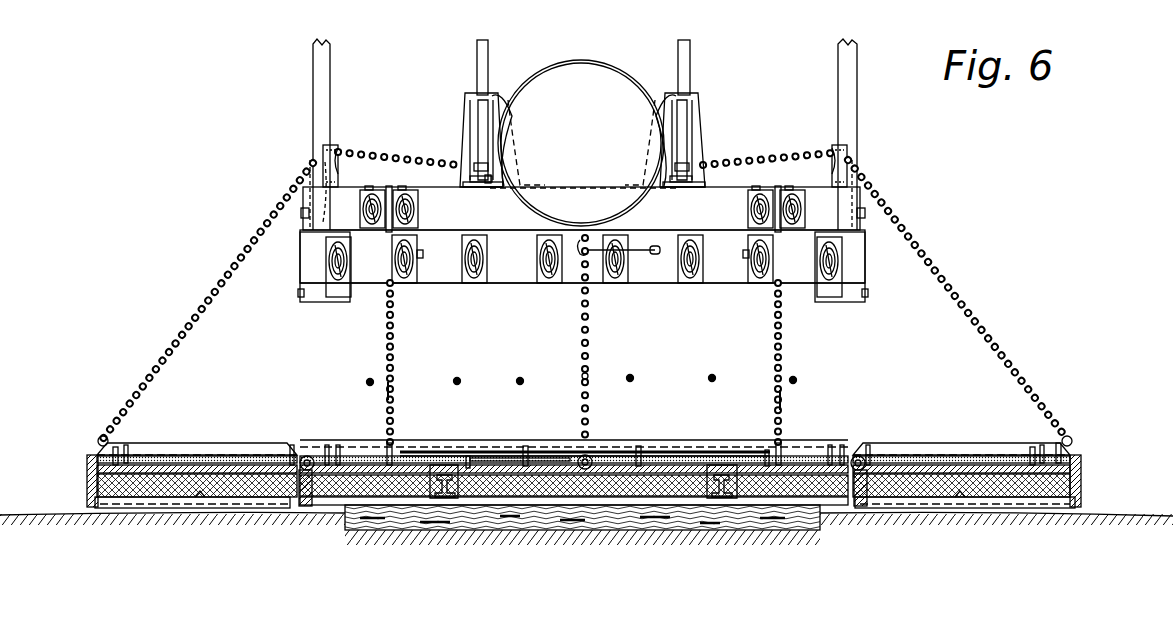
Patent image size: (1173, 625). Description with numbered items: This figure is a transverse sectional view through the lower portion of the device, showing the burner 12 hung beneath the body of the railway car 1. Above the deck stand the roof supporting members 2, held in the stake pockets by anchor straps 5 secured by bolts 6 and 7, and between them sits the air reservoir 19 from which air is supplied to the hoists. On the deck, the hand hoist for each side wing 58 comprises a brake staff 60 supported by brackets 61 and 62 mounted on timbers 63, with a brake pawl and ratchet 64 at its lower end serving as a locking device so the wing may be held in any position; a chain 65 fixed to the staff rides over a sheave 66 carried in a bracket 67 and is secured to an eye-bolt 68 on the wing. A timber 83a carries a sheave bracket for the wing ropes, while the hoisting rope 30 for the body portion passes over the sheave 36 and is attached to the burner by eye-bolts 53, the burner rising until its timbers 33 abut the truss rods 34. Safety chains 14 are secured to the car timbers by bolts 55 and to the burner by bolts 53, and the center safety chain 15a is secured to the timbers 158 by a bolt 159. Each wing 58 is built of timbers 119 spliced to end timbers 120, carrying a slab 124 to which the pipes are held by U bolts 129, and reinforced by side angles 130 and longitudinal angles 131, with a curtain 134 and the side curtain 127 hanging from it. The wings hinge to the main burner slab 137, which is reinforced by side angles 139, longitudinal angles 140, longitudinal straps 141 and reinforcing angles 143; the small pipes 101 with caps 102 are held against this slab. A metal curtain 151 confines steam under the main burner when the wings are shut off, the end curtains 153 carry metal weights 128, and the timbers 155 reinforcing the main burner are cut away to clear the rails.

The body of railway car 1 is at (680, 232).
The roof supporting members 2 is at (320, 82).
The anchor straps 5 is at (320, 200).
The bolt 6 is at (300, 214).
The bolt 7 is at (298, 291).
The burner 12 is at (820, 505).
The safety chains 14 is at (386, 355).
The safety chain 15a is at (588, 378).
The air reservoir 19 is at (585, 143).
The hoisting rope 30 is at (386, 388).
The timbers 33 is at (520, 440).
The truss rods 34 is at (367, 382).
The sheave 36 is at (390, 189).
The eye-bolts 53 is at (394, 446).
The bolts 55 is at (418, 254).
The side wings 58 is at (90, 482).
The brake staff 60 is at (486, 60).
The bracket 61 is at (470, 118).
The bracket 62 is at (520, 82).
The timbers 63 is at (490, 198).
The brake pawl and ratchet 64 is at (478, 198).
The hand hoist chain 65 is at (224, 254).
The sheave 66 is at (340, 160).
The bracket 67 is at (332, 150).
The eye-bolt 68 is at (99, 439).
The timber 83a is at (378, 250).
The small pipes 101 is at (493, 430).
The cap 102 is at (310, 456).
The timbers 119 is at (185, 465).
The timbers 120 is at (86, 463).
The slab 124 is at (222, 455).
The side curtain 127 is at (90, 492).
The metal weights 128 is at (168, 505).
The U bolts 129 is at (114, 444).
The side angles 130 is at (583, 446).
The longitudinal angles 131 is at (127, 444).
The curtain 134 is at (292, 448).
The main burner slab 137 is at (455, 459).
The side angles 139 is at (588, 446).
The longitudinal angles 140 is at (449, 455).
The longitudinal straps 141 is at (530, 448).
The reenforcing angles 143 is at (340, 455).
The metal curtain 151 is at (297, 495).
The end curtains 153 is at (224, 508).
The timbers 155 is at (640, 498).
The timbers 158 is at (538, 285).
The bolt 159 is at (634, 266).